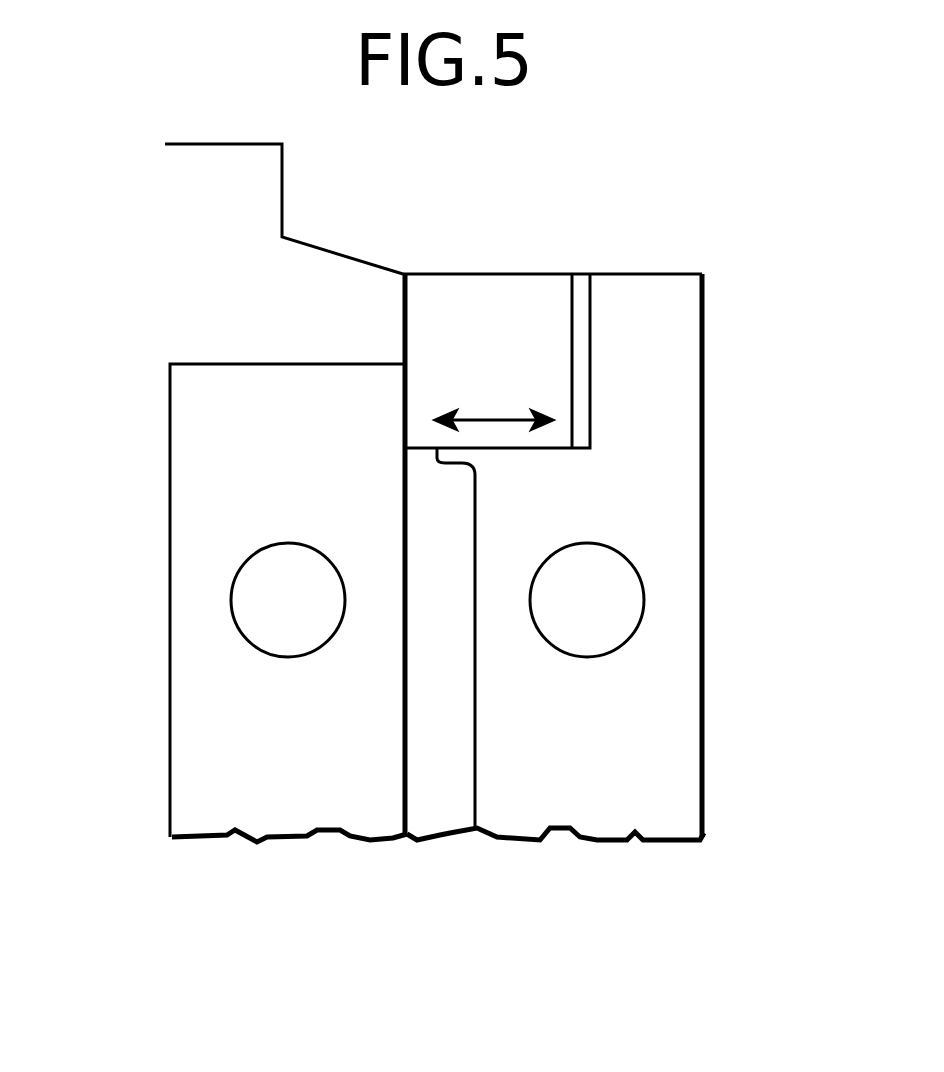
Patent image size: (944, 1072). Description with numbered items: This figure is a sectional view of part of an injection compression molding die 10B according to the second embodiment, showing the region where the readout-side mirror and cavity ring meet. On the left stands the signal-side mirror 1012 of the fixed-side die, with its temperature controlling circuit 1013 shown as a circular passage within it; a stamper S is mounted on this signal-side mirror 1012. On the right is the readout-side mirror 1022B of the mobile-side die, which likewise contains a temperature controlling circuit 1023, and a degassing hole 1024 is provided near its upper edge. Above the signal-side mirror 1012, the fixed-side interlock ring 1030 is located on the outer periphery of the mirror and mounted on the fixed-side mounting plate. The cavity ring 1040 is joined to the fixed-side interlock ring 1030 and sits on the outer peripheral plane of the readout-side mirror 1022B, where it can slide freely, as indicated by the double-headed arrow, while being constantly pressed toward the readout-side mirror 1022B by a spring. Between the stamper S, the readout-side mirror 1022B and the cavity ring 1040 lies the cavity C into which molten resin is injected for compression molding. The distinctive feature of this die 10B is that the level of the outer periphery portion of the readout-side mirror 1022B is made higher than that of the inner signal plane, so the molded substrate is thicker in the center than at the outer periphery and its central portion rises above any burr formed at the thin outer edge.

The fixed-side interlock ring 1030 is at (183, 203).
The cavity ring 1040 is at (477, 288).
The signal-side mirror 1012 is at (187, 518).
The temperature controlling circuit 1013 is at (288, 658).
The readout-side mirror 1022B is at (690, 570).
The temperature controlling circuit 1023 is at (588, 657).
The degassing hole 1024 is at (438, 461).
The stamper S is at (410, 777).
The cavity C is at (450, 732).
The injection compression molding die 10B is at (163, 888).